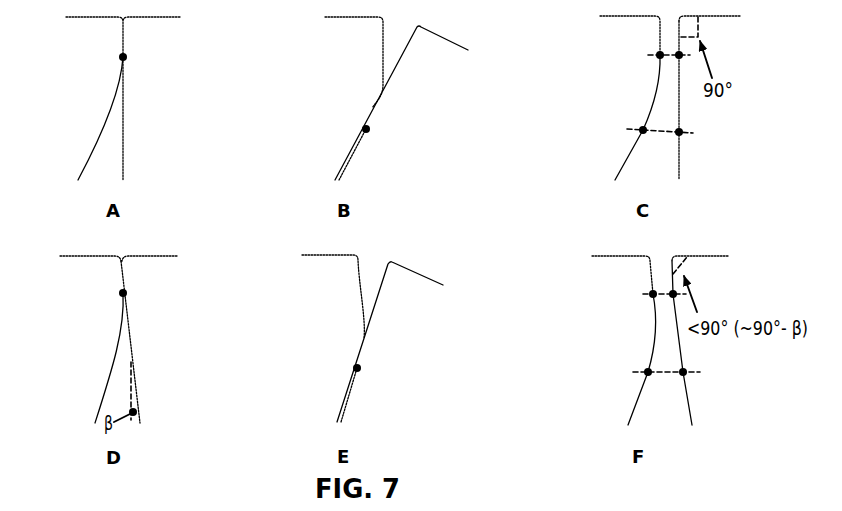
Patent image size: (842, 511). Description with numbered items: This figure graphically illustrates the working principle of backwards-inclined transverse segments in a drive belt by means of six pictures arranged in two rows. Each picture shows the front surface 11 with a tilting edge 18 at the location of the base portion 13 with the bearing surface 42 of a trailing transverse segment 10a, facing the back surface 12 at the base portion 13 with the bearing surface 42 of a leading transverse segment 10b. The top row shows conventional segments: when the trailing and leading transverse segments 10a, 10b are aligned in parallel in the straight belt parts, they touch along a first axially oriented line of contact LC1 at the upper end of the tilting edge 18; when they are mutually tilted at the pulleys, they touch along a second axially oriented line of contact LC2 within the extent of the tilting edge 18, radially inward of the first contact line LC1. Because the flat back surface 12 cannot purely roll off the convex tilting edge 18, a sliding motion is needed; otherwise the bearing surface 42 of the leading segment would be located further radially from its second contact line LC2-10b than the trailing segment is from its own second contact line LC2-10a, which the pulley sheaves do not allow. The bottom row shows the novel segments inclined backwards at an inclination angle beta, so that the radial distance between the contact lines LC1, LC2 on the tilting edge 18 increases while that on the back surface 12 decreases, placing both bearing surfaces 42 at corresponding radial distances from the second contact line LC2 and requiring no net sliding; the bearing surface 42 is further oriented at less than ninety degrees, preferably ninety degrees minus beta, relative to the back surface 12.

The bearing surface 42 is at (76, 21).
The front surface 11 is at (81, 163).
The back surface 12 is at (127, 162).
The tilting edge 18 is at (112, 101).
The first axially oriented line of contact LC1 is at (125, 59).
The second axially oriented line of contact LC2 is at (368, 131).
The second contact line on the trailing transverse segment LC2-10a is at (641, 129).
The second contact line on the leading transverse segment LC2-10b is at (681, 132).
The trailing transverse segment 10a is at (180, 245).
The leading transverse segment 10b is at (296, 237).
The base portion 13 is at (443, 357).